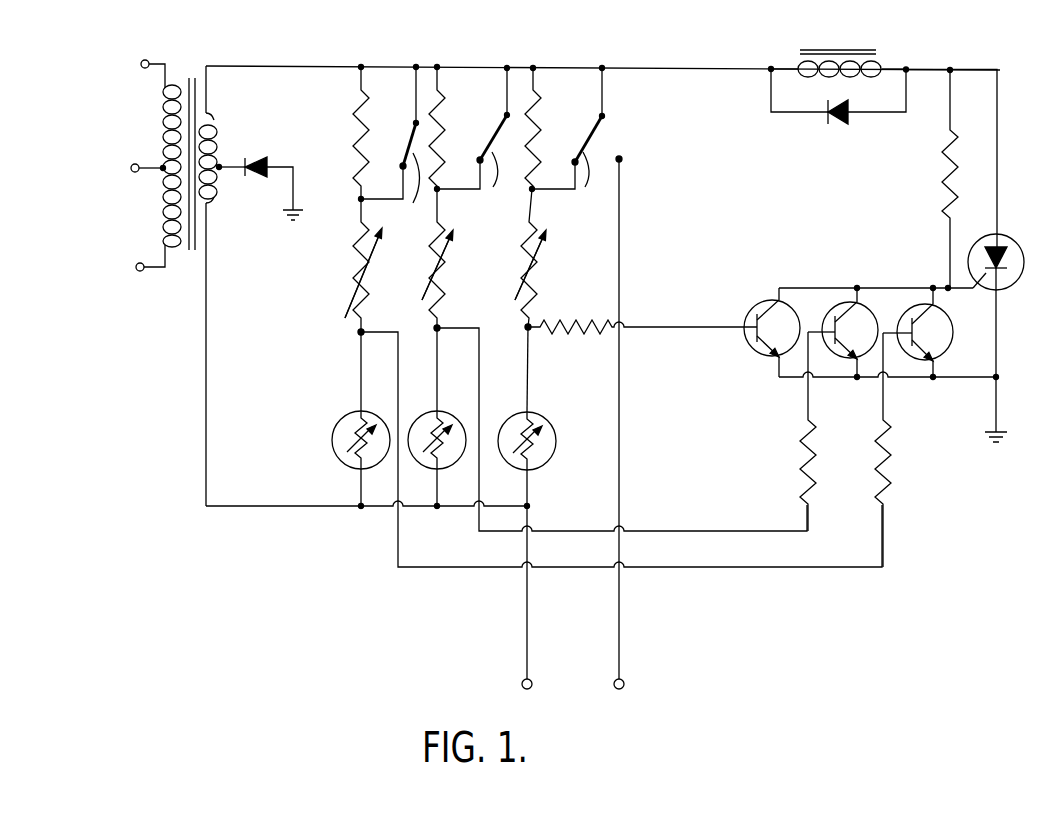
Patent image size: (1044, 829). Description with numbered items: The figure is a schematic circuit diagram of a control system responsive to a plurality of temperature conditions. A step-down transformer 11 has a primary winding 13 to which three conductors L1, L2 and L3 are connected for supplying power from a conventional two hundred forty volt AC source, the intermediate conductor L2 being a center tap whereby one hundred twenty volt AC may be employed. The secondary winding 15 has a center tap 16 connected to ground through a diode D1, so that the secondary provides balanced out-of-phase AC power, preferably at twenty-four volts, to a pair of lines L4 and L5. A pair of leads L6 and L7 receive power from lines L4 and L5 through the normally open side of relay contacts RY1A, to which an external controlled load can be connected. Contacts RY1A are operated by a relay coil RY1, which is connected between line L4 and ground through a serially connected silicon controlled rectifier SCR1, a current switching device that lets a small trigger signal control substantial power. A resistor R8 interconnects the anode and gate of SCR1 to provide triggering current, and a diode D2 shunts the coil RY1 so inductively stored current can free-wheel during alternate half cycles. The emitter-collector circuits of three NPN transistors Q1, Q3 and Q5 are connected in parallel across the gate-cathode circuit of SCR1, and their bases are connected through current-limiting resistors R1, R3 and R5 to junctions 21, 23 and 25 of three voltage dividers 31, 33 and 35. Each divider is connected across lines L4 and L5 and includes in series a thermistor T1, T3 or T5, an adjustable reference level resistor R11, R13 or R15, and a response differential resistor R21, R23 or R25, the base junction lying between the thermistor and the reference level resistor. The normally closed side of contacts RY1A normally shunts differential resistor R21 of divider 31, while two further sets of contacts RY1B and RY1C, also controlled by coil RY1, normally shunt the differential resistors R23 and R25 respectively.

The step-down transformer 11 is at (187, 142).
The primary winding 13 is at (163, 216).
The secondary winding 15 is at (212, 131).
The center tap 16 is at (220, 171).
The conductor L1 is at (145, 82).
The conductor (center tap) L2 is at (143, 164).
The conductor L3 is at (140, 263).
The line L4 is at (678, 68).
The line L5 is at (252, 505).
The lead L6 is at (527, 611).
The lead L7 is at (621, 608).
The diode D1 is at (258, 158).
The diode D2 is at (833, 124).
The response differential resistor R25 is at (352, 104).
The response differential resistor R23 is at (443, 112).
The response differential resistor R21 is at (540, 115).
The adjustable reference level resistor R15 is at (372, 267).
The adjustable reference level resistor R13 is at (447, 266).
The adjustable reference level resistor R11 is at (538, 255).
The relay contacts RY1C is at (398, 146).
The relay contacts RY1B is at (474, 142).
The relay contacts RY1A is at (571, 142).
The relay coil RY1 is at (812, 71).
The voltage divider 35 is at (368, 283).
The voltage divider 33 is at (448, 284).
The voltage divider 31 is at (541, 270).
The junction 25 is at (358, 334).
The junction 23 is at (433, 331).
The junction 21 is at (527, 330).
The thermistor T5 is at (365, 412).
The thermistor T3 is at (443, 412).
The thermistor T1 is at (535, 418).
The current-limiting resistor R1 is at (572, 334).
The current-limiting resistor R3 is at (800, 473).
The current-limiting resistor R5 is at (884, 472).
The resistor R8 is at (938, 173).
The NPN transistor Q1 is at (758, 304).
The NPN transistor Q3 is at (838, 303).
The NPN transistor Q5 is at (952, 321).
The silicon controlled rectifier SCR1 is at (968, 247).